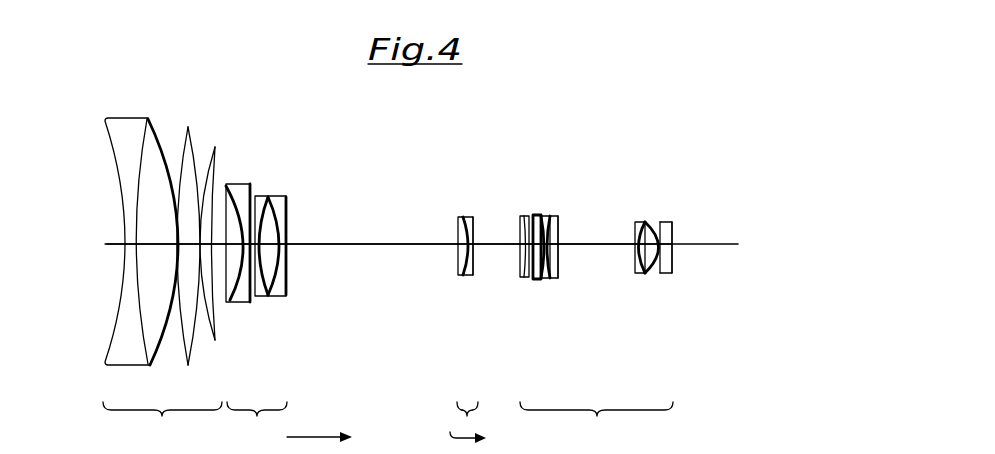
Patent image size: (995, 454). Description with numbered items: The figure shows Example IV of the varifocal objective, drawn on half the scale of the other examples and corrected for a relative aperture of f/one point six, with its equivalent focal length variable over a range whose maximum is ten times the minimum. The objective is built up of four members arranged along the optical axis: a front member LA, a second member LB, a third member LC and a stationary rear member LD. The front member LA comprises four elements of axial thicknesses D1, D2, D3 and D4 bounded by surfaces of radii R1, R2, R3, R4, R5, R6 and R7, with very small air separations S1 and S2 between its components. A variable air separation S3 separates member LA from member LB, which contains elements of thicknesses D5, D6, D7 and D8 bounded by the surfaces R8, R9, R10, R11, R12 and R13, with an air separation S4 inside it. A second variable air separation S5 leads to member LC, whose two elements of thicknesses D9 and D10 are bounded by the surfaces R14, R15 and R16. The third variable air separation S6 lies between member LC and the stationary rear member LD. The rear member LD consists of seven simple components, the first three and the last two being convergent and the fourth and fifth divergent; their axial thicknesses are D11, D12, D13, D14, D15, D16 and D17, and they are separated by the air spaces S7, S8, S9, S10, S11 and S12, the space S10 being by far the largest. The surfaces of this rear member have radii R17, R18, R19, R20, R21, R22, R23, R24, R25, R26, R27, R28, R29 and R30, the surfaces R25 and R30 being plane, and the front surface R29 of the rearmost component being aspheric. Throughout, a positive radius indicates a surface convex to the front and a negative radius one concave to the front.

The radius of curvature of first surface R1 is at (124, 221).
The radius of curvature of second surface R2 is at (137, 184).
The radius of curvature of third surface R3 is at (163, 146).
The radius of curvature of fourth surface R4 is at (187, 148).
The radius of curvature of fifth surface R5 is at (190, 155).
The radius of curvature of sixth surface R6 is at (216, 160).
The radius of curvature of seventh surface R7 is at (260, 188).
The radius of curvature of eighth surface R8 is at (233, 184).
The radius of curvature of ninth surface R9 is at (250, 197).
The radius of curvature of tenth surface R10 is at (258, 196).
The radius of curvature of eleventh surface R11 is at (268, 205).
The radius of curvature of twelfth surface R12 is at (283, 208).
The radius of curvature of thirteenth surface R13 is at (286, 229).
The radius of curvature of fourteenth surface R14 is at (459, 245).
The radius of curvature of fifteenth surface R15 is at (462, 228).
The radius of curvature of sixteenth surface R16 is at (472, 217).
The radius of curvature of seventeenth surface R17 is at (513, 220).
The radius of curvature of eighteenth surface R18 is at (533, 212).
The radius of curvature of nineteenth surface R19 is at (538, 212).
The radius of curvature of twentieth surface R20 is at (552, 210).
The radius of curvature of twenty-first surface R21 is at (558, 215).
The radius of curvature of twenty-second surface R22 is at (563, 210).
The radius of curvature of twenty-third surface R23 is at (568, 212).
The radius of curvature of twenty-fourth surface R24 is at (565, 230).
The radius of curvature of twenty-fifth surface R25 is at (650, 230).
The radius of curvature of twenty-sixth surface R26 is at (655, 230).
The radius of curvature of twenty-seventh surface R27 is at (676, 174).
The radius of curvature of twenty-eighth surface R28 is at (685, 150).
The radius of curvature of twenty-ninth surface R29 is at (681, 230).
The radius of curvature of thirtieth surface R30 is at (675, 240).
The axial thickness of first element D1 is at (176, 244).
The axial thickness of second element D2 is at (180, 246).
The axial thickness of third element D3 is at (190, 247).
The axial thickness of fourth element D4 is at (209, 333).
The axial thickness of fifth element D5 is at (272, 298).
The axial thickness of sixth element D6 is at (280, 297).
The axial thickness of seventh element D7 is at (287, 257).
The axial thickness of eighth element D8 is at (287, 247).
The axial thickness of ninth element D9 is at (462, 245).
The axial thickness of tenth element D10 is at (467, 264).
The axial thickness of eleventh element D11 is at (521, 248).
The axial thickness of twelfth element D12 is at (540, 280).
The axial thickness of thirteenth element D13 is at (552, 280).
The axial thickness of fourteenth element D14 is at (558, 250).
The axial thickness of fifteenth element D15 is at (637, 273).
The axial thickness of sixteenth element D16 is at (665, 275).
The axial thickness of seventeenth element D17 is at (673, 268).
The first axial air separation S1 is at (207, 243).
The second axial air separation S2 is at (174, 250).
The third axial air separation S3 is at (247, 303).
The fourth axial air separation S4 is at (266, 298).
The fifth axial air separation S5 is at (395, 252).
The sixth axial air separation S6 is at (490, 248).
The seventh axial air separation S7 is at (533, 280).
The eighth axial air separation S8 is at (545, 280).
The ninth axial air separation S9 is at (556, 278).
The tenth axial air separation S10 is at (590, 241).
The eleventh axial air separation S11 is at (648, 275).
The twelfth axial air separation S12 is at (672, 275).
The front member LA is at (162, 420).
The second member LB is at (257, 420).
The third member LC is at (468, 420).
The stationary rear member LD is at (596, 423).